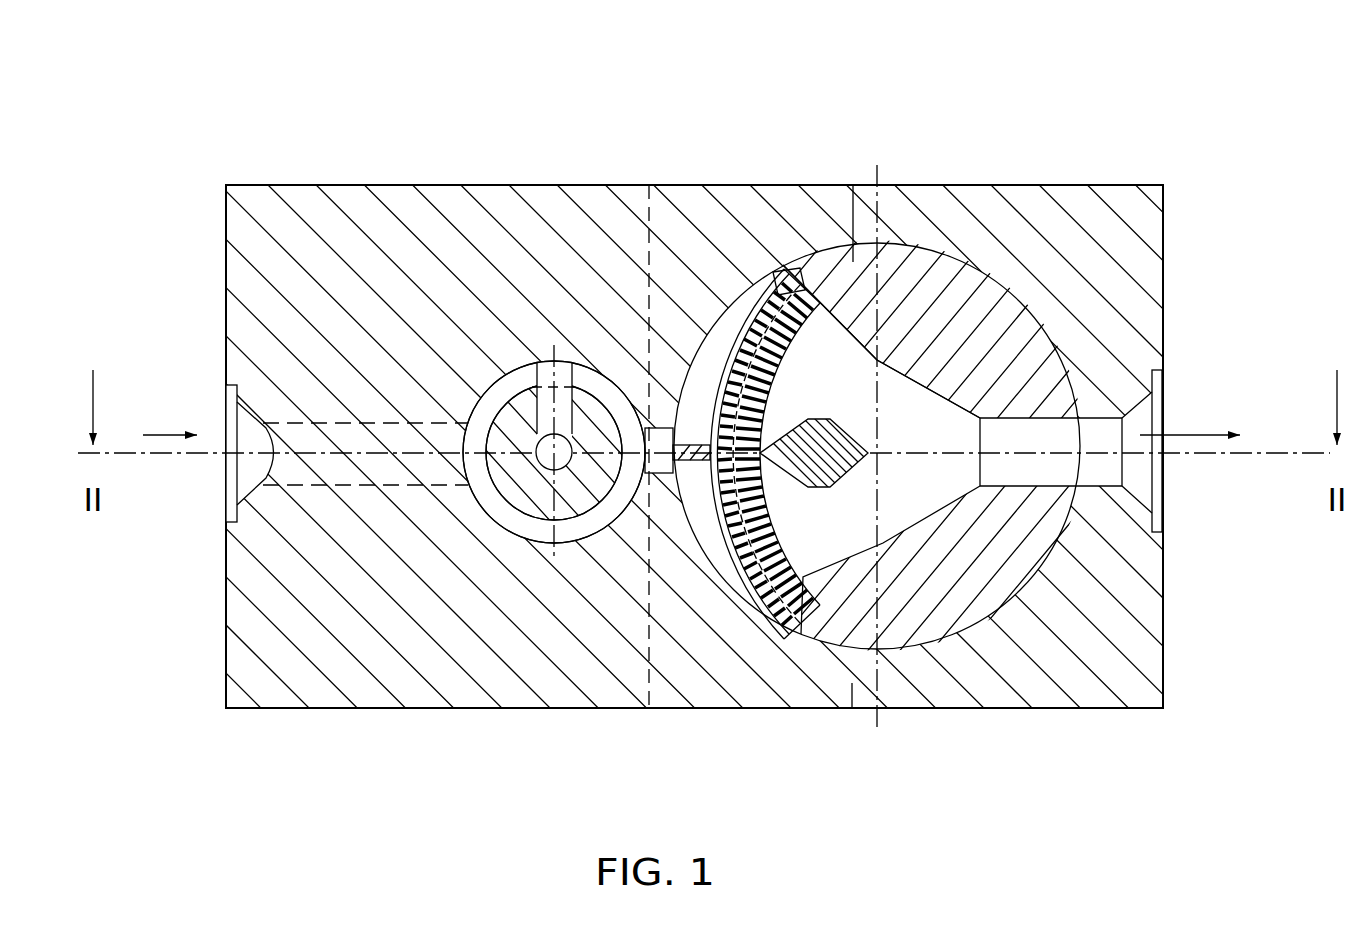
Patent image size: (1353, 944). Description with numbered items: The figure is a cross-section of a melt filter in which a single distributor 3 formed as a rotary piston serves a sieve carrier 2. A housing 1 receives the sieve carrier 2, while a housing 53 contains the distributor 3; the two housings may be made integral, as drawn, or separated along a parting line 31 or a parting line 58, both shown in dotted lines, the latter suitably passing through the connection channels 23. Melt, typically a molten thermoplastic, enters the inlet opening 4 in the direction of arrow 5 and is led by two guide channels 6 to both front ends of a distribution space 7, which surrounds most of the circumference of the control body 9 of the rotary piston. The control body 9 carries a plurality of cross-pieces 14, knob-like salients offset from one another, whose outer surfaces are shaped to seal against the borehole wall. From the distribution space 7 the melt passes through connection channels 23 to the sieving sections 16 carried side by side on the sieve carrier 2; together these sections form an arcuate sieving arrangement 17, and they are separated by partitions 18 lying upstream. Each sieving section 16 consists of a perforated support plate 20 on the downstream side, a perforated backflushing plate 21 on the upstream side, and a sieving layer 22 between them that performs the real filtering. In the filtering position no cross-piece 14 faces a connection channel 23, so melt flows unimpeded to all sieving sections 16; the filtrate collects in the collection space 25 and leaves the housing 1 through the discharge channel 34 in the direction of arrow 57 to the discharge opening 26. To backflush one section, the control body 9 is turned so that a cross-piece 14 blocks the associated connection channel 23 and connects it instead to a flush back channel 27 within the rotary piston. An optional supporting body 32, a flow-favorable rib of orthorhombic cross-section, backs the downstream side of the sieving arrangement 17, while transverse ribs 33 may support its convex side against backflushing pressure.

The housing 1 is at (1178, 176).
The sieve carrier 2 is at (998, 352).
The distributor 3 is at (540, 466).
The inlet opening 4 is at (247, 443).
The arrow 5 is at (152, 432).
The guide channels 6 is at (358, 485).
The distribution space 7 is at (520, 520).
The control body 9 is at (505, 405).
The cross-pieces 14 is at (586, 390).
The sieving sections 16 is at (795, 345).
The sieving arrangement 17 is at (780, 400).
The partitions 18 is at (710, 540).
The perforated support plate 20 is at (800, 620).
The perforated backflushing plate 21 is at (757, 322).
The sieving layer 22 is at (776, 598).
The connection channels 23 is at (590, 482).
The collection space 25 is at (897, 438).
The discharge opening 26 is at (1135, 470).
The flush back channel 27 is at (555, 360).
The parting line 31 is at (853, 195).
The supporting body 32 is at (833, 477).
The transverse ribs 33 is at (680, 458).
The discharge channel 34 is at (1005, 470).
The housing 53 is at (202, 248).
The arrow 57 is at (1192, 433).
The parting line 58 is at (649, 636).